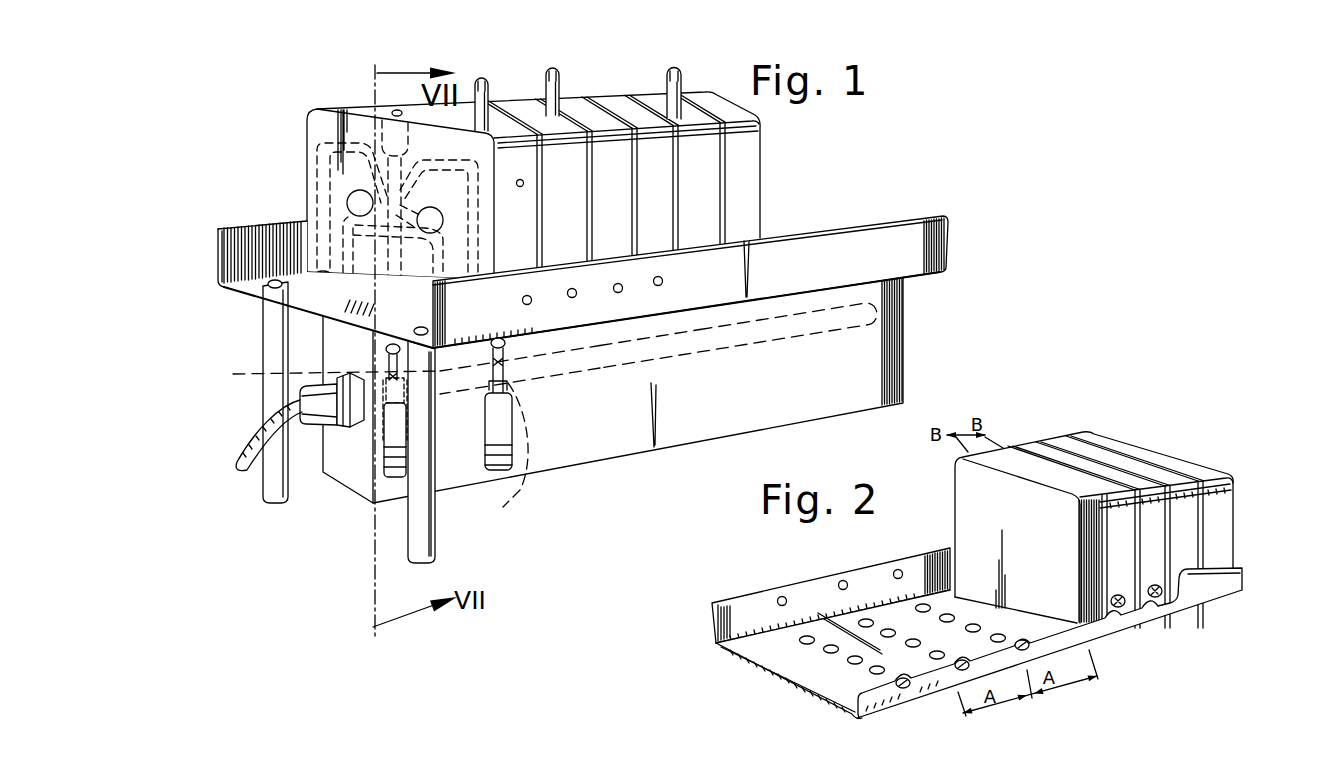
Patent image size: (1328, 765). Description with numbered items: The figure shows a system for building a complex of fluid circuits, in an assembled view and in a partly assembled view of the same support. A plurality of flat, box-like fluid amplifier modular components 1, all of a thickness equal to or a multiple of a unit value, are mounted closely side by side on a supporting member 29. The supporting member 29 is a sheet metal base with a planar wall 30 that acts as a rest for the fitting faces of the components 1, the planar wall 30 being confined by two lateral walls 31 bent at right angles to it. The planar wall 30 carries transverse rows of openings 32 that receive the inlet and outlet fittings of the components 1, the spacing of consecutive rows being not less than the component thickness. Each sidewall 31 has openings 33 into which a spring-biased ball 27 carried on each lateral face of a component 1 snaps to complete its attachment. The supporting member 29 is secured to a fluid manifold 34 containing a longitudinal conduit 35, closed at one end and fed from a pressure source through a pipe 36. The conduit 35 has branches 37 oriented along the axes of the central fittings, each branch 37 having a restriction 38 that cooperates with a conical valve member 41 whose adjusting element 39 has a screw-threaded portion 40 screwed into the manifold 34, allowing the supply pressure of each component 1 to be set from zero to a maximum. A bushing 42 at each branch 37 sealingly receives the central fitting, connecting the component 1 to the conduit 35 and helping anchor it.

In FIG. 1, the fluid amplifier modular component 1 is at (346, 103).
In FIG. 2, the fluid amplifier modular component 1 is at (1074, 446).
In FIG. 2, the ball 27 is at (1155, 599).
In FIG. 1, the supporting member 29 is at (619, 362).
In FIG. 2, the supporting member 29 is at (967, 628).
In FIG. 1, the planar wall 30 is at (318, 305).
In FIG. 2, the planar wall 30 is at (979, 656).
In FIG. 1, the lateral wall 31 is at (690, 254).
In FIG. 2, the lateral wall 31 is at (968, 597).
In FIG. 2, the openings 32 is at (824, 649).
In FIG. 1, the opening 33 is at (572, 288).
In FIG. 2, the opening 33 is at (842, 584).
In FIG. 1, the fluid manifold 34 is at (598, 470).
In FIG. 1, the longitudinal conduit 35 is at (651, 351).
In FIG. 1, the pipe 36 is at (233, 478).
In FIG. 1, the branch 37 is at (515, 337).
In FIG. 1, the restriction 38 is at (555, 366).
In FIG. 1, the adjusting element 39 is at (519, 433).
In FIG. 1, the screw-threaded portion 40 is at (492, 471).
In FIG. 1, the conical valve member 41 is at (508, 386).
In FIG. 1, the bushing 42 is at (323, 378).